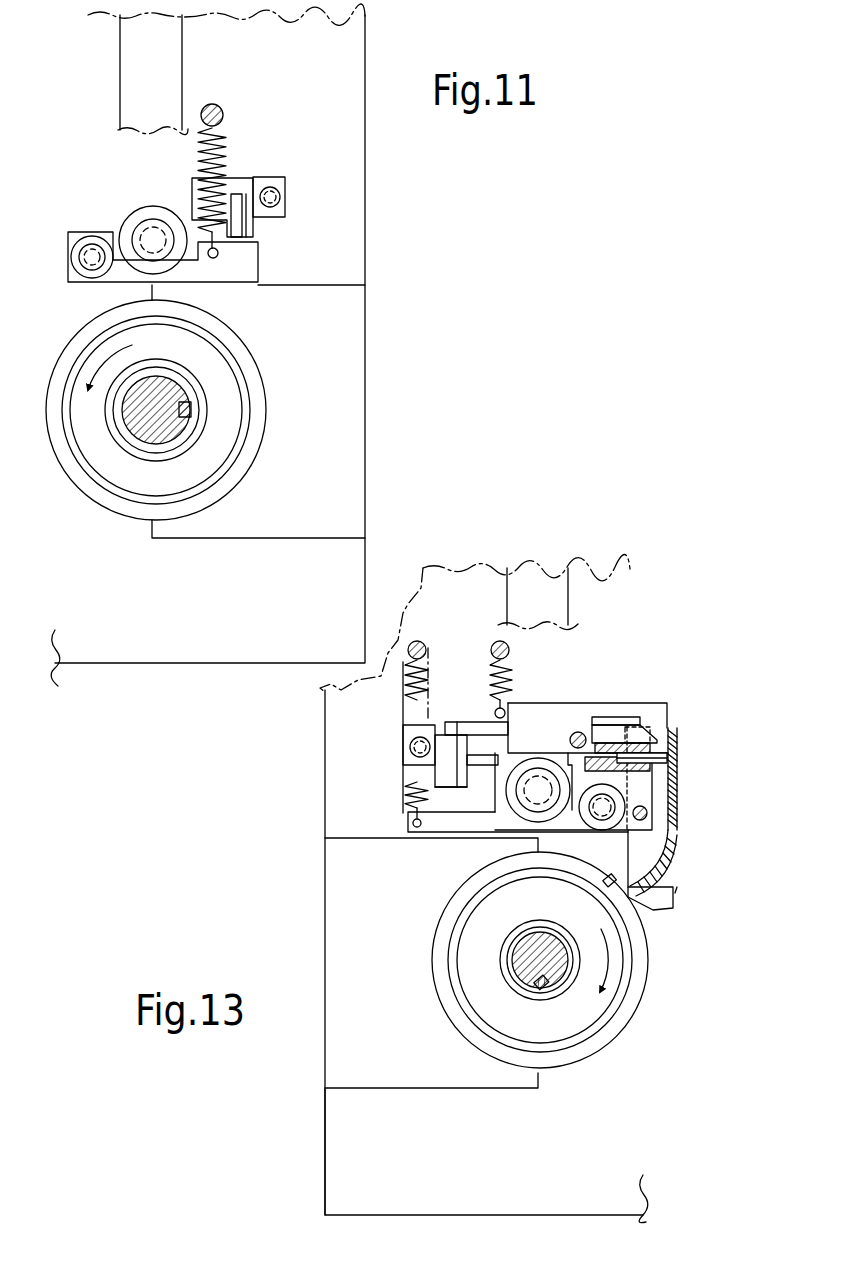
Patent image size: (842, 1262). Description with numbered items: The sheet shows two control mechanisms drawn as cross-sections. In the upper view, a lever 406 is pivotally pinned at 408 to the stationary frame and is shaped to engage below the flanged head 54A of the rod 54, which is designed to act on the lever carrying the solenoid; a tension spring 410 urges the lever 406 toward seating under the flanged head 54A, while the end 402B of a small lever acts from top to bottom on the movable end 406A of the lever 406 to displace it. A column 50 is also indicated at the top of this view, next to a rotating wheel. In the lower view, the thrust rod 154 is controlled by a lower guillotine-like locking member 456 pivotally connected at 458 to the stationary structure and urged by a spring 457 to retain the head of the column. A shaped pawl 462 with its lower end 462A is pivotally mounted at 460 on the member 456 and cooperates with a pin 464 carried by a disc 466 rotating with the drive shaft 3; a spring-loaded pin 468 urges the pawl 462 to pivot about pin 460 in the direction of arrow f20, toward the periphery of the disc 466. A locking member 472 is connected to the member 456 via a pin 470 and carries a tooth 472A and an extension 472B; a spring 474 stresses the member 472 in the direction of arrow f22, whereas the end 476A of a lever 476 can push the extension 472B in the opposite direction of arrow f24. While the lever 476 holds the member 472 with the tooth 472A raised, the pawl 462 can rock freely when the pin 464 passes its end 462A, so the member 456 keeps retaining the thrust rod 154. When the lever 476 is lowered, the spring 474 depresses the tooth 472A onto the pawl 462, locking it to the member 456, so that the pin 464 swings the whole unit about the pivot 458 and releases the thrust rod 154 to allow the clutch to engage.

In FIG. 11, the column 50 is at (124, 53).
In FIG. 11, the tension spring 410 is at (225, 137).
In FIG. 11, the rod 54 is at (165, 234).
In FIG. 11, the flanged head 54A is at (133, 230).
In FIG. 11, the pivot pin 408 is at (83, 248).
In FIG. 11, the end of lever 402B is at (253, 236).
In FIG. 11, the lever 406 is at (240, 283).
In FIG. 11, the movable end 406A is at (250, 267).
In FIG. 13, the spring 474 is at (482, 655).
In FIG. 13, the end of lever 476A is at (455, 725).
In FIG. 13, the extension 472B is at (450, 747).
In FIG. 13, the spring 457 is at (405, 807).
In FIG. 13, the lever 476 is at (455, 822).
In FIG. 13, the guillotine-like locking member 456 is at (448, 778).
In FIG. 13, the thrust rod 154 is at (541, 775).
In FIG. 13, the pin 470 is at (580, 735).
In FIG. 13, the locking member 472 is at (632, 708).
In FIG. 13, the tooth 472A is at (667, 715).
In FIG. 13, the spring-loaded pin 468 is at (668, 757).
In FIG. 13, the pin 460 is at (647, 812).
In FIG. 13, the pivot 458 is at (597, 813).
In FIG. 13, the pin 464 is at (612, 878).
In FIG. 13, the shaped pawl 462 is at (673, 873).
In FIG. 13, the lower end of pawl 462A is at (663, 900).
In FIG. 13, the disc 466 is at (433, 975).
In FIG. 13, the drive shaft 3 is at (528, 982).
In FIG. 13, the arrow f24 is at (452, 712).
In FIG. 13, the arrow f22 is at (533, 697).
In FIG. 13, the arrow f20 is at (733, 877).